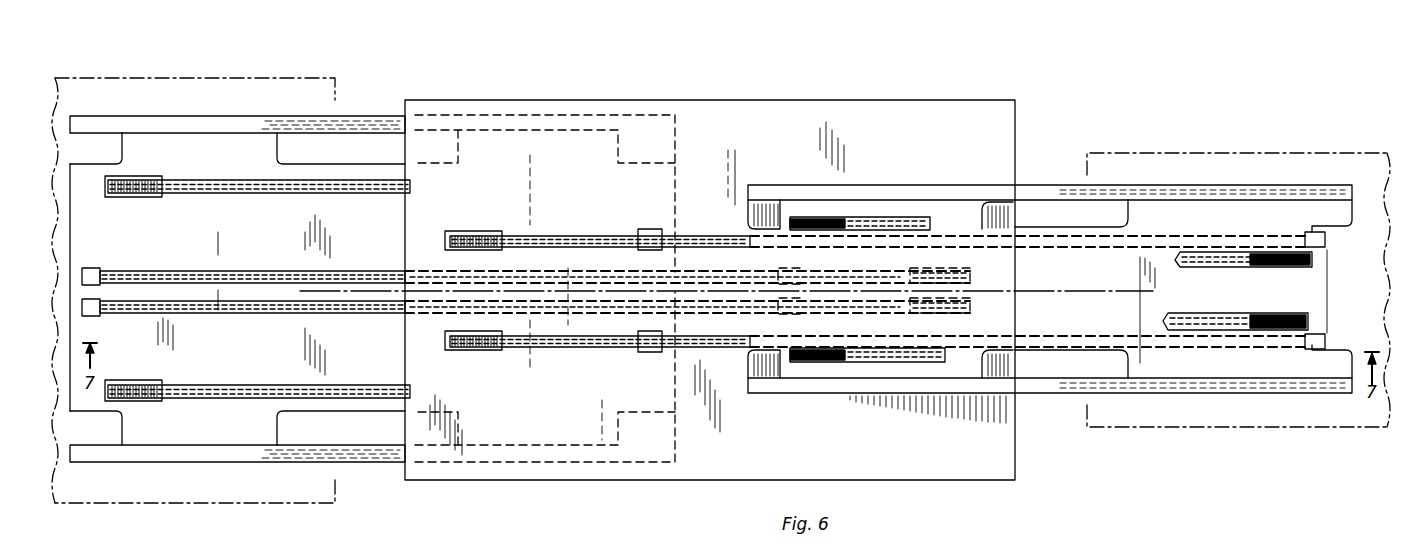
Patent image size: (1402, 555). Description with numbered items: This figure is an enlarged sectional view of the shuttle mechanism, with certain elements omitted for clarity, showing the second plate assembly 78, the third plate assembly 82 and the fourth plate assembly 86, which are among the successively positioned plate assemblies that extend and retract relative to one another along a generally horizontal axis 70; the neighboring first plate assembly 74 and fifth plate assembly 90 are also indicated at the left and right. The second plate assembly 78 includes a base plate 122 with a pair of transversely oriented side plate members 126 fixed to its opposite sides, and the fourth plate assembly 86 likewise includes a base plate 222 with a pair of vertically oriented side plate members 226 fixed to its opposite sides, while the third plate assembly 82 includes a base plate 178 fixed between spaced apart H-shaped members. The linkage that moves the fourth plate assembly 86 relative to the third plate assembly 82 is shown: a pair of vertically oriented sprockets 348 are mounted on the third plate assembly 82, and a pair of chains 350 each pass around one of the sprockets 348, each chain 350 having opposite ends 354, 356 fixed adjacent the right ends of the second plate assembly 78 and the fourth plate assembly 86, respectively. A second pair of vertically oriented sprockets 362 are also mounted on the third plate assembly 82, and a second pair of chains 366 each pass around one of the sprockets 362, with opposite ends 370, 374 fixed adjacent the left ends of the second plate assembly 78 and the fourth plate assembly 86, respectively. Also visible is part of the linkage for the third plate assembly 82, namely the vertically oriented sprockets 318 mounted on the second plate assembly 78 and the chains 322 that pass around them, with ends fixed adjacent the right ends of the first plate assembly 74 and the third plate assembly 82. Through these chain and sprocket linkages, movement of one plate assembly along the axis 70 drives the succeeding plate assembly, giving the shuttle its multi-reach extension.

The first plate assembly 74 is at (186, 76).
The second plate assembly 78 is at (388, 110).
The third plate assembly 82 is at (722, 73).
The fourth plate assembly 86 is at (1052, 185).
The fifth plate assembly 90 is at (1211, 153).
The horizontal axis 70 is at (1117, 292).
The base plate 122 is at (213, 423).
The side plate members 126 is at (192, 120).
The base plate 178 is at (987, 438).
The base plate 222 is at (1250, 294).
The side plate members 226 is at (942, 197).
The sprockets 318 is at (143, 177).
The chains 322 is at (313, 195).
The sprockets 348 is at (493, 230).
The chains 350 is at (575, 233).
The chain end 354 is at (652, 226).
The chain end 356 is at (1308, 233).
The sprockets 362 is at (973, 277).
The chains 366 is at (278, 277).
The chain end 370 is at (90, 277).
The chain end 374 is at (787, 272).